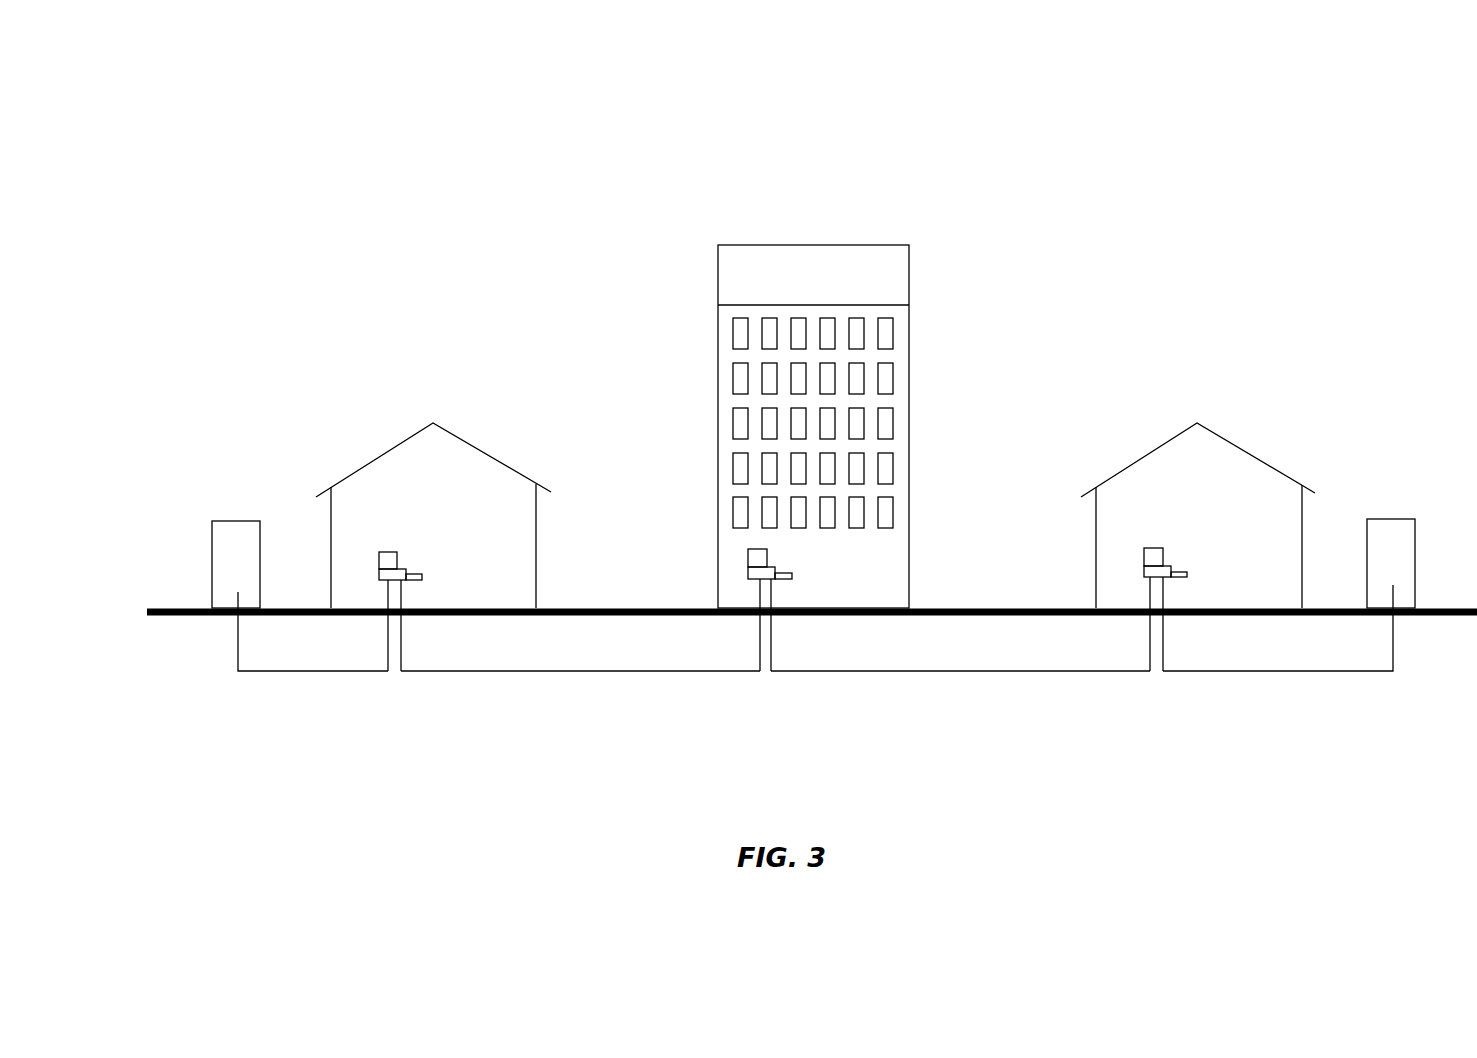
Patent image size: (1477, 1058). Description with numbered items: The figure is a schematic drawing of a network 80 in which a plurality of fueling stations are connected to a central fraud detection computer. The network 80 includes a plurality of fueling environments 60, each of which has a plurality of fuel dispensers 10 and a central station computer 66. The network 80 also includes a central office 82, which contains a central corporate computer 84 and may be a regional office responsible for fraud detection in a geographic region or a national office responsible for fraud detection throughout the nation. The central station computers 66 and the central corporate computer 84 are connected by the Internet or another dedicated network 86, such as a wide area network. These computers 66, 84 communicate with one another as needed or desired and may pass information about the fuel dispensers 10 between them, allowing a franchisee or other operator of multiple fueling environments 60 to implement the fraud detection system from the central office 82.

The network 80 is at (792, 86).
The central office 82 is at (825, 198).
The fueling environment 60 is at (461, 296).
The fuel dispenser 10 is at (235, 496).
The central station computer 66 is at (403, 567).
The central corporate computer 84 is at (748, 572).
The dedicated network 86 is at (545, 672).